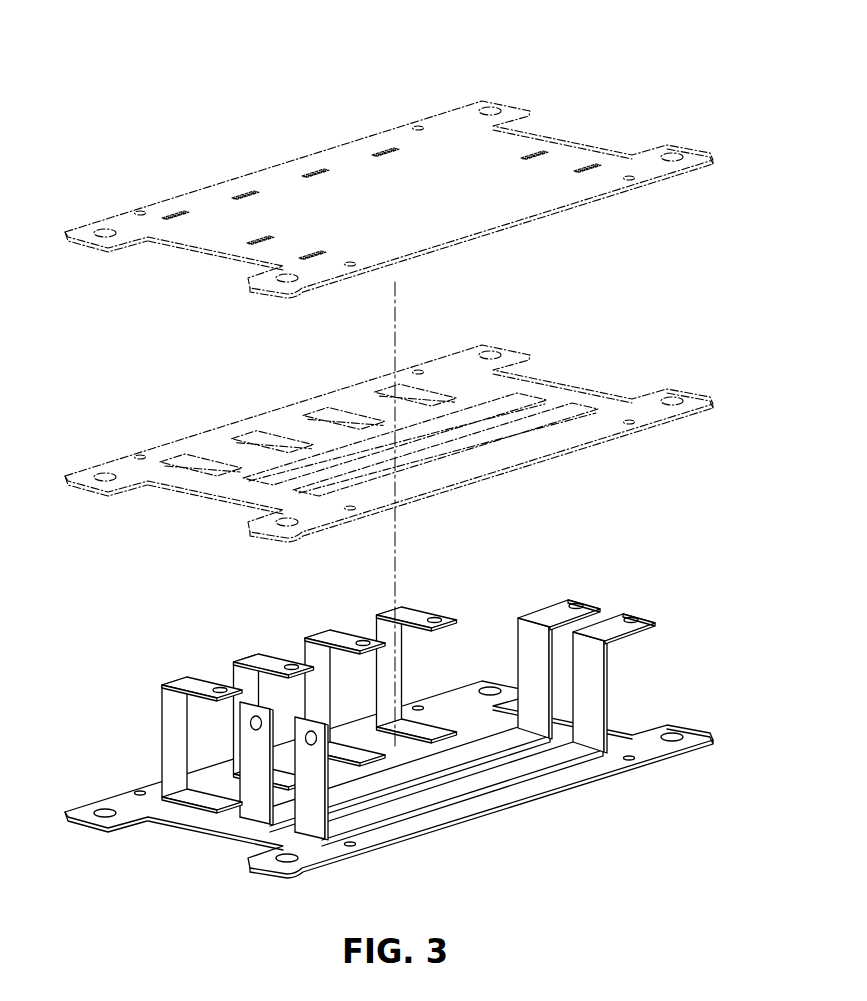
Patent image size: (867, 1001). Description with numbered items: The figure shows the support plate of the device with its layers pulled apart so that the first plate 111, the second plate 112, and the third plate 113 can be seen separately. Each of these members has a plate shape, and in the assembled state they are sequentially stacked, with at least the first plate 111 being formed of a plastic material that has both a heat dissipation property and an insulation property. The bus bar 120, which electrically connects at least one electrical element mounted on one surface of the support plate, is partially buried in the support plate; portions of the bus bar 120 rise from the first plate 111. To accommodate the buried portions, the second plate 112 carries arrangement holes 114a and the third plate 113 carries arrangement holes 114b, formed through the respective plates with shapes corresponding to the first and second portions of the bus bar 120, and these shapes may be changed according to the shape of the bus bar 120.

The first plate 111 is at (607, 777).
The second plate 112 is at (552, 382).
The third plate 113 is at (447, 112).
The arrangement holes 114a is at (441, 400).
The arrangement holes 114b is at (390, 148).
The bus bar 120 is at (604, 668).